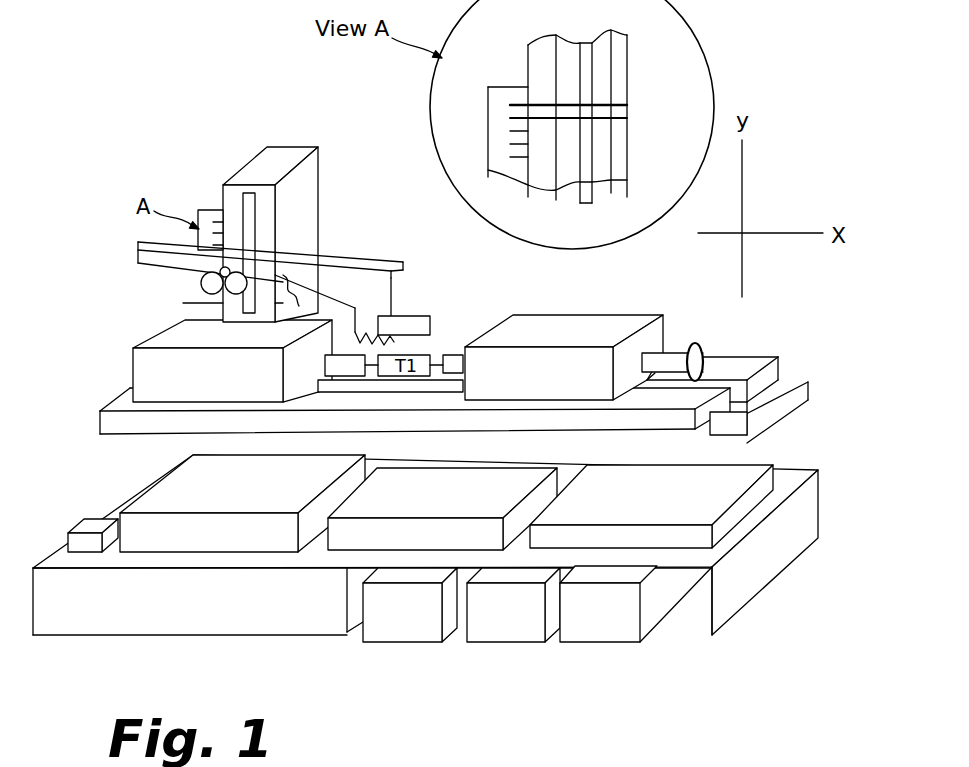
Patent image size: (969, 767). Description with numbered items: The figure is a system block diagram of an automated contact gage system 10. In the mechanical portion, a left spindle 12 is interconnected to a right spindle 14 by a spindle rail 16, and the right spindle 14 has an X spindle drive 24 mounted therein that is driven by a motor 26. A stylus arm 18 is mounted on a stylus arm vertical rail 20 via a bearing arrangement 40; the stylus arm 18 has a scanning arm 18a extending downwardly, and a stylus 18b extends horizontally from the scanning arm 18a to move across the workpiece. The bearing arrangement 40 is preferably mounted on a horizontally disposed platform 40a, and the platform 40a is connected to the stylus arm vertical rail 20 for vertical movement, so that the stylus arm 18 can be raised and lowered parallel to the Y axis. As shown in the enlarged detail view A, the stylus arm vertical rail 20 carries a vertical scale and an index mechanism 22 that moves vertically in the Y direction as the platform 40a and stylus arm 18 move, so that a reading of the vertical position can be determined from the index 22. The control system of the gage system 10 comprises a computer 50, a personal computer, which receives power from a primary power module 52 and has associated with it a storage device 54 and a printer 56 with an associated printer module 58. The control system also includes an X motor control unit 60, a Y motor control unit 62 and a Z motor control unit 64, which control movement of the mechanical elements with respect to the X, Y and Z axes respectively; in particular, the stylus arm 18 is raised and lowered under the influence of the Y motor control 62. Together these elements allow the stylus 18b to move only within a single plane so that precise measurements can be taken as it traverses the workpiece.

The automated contact gage system 10 is at (187, 82).
The left spindle 12 is at (133, 366).
The right spindle 14 is at (567, 323).
The spindle rail 16 is at (415, 412).
The stylus arm 18 is at (137, 245).
The scanning arm 18a is at (373, 283).
The stylus 18b is at (424, 315).
The stylus arm vertical rail 20 is at (223, 197).
The index mechanism 22 is at (627, 100).
The X spindle drive 24 is at (667, 354).
The motor 26 is at (809, 393).
The bearing arrangement 40 is at (186, 301).
The platform 40a is at (183, 303).
The computer 50 is at (180, 485).
The primary power module 52 is at (68, 532).
The storage device 54 is at (425, 548).
The printer 56 is at (492, 484).
The printer module 58 is at (646, 487).
The X motor control unit 60 is at (605, 645).
The Y motor control unit 62 is at (513, 645).
The Z motor control unit 64 is at (405, 645).